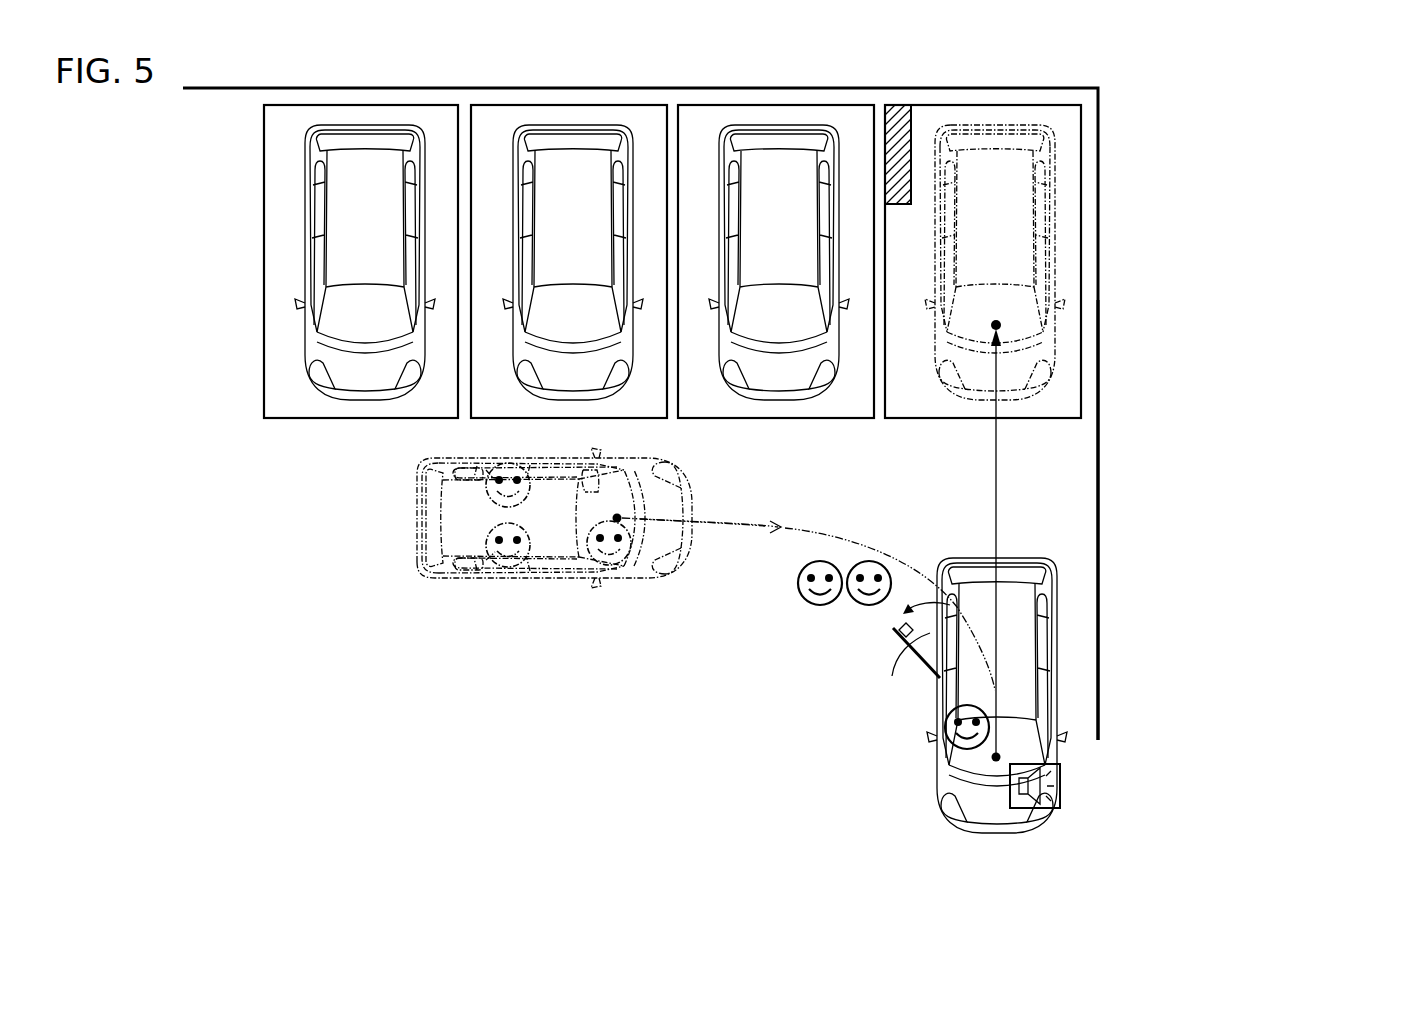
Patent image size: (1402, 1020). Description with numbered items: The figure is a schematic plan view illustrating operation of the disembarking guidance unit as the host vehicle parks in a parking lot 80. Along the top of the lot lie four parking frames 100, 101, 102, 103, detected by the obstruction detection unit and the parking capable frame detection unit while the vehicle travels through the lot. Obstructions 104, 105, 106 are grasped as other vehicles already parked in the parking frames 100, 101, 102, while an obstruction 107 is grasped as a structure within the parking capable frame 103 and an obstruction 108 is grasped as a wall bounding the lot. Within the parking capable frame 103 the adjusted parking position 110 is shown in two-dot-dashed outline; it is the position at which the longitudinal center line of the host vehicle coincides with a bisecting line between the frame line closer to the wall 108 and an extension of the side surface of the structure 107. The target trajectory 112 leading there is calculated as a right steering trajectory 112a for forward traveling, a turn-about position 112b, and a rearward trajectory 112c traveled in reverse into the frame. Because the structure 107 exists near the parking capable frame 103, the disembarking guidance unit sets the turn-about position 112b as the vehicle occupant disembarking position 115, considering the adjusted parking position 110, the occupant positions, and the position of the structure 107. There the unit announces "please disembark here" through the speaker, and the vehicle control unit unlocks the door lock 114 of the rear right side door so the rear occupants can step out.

The parking lot 80 is at (481, 89).
The parking frame 100 is at (336, 418).
The parking frame 101 is at (645, 418).
The parking frame 102 is at (760, 418).
The parking capable frame 103 is at (1006, 418).
The obstruction (other vehicle) 104 is at (361, 125).
The obstruction (other vehicle) 105 is at (566, 125).
The obstruction (other vehicle) 106 is at (773, 125).
The obstruction (structure) 107 is at (899, 110).
The obstruction (wall) 108 is at (1099, 538).
The parking position 110 is at (1052, 263).
The target trajectory 112 is at (795, 499).
The right steering trajectory 112a is at (740, 535).
The turn-about position 112b is at (999, 754).
The rearward trajectory 112c is at (995, 491).
The door lock 114 is at (910, 643).
The vehicle occupant disembarking position 115 is at (1177, 755).